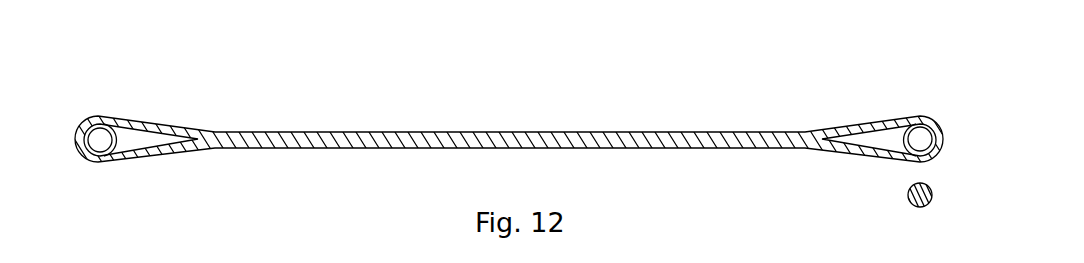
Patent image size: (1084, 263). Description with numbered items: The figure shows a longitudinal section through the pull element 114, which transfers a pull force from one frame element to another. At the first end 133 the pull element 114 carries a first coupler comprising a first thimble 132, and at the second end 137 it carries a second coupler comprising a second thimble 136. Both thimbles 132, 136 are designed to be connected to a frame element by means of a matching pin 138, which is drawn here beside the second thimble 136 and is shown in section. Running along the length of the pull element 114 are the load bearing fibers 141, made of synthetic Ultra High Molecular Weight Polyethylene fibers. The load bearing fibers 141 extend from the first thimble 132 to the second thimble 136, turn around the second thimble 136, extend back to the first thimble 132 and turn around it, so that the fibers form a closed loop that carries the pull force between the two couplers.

The pull element 114 is at (326, 97).
The first thimble 132 is at (100, 107).
The first end 133 is at (183, 68).
The second thimble 136 is at (915, 105).
The second end 137 is at (817, 100).
The matching pin 138 is at (893, 200).
The load bearing fibers 141 is at (550, 135).